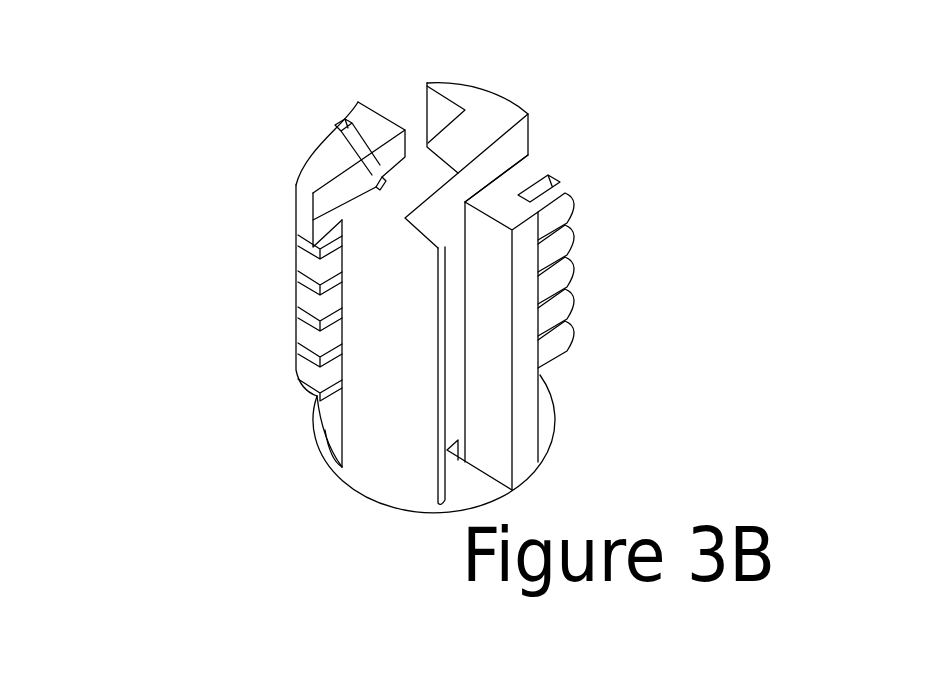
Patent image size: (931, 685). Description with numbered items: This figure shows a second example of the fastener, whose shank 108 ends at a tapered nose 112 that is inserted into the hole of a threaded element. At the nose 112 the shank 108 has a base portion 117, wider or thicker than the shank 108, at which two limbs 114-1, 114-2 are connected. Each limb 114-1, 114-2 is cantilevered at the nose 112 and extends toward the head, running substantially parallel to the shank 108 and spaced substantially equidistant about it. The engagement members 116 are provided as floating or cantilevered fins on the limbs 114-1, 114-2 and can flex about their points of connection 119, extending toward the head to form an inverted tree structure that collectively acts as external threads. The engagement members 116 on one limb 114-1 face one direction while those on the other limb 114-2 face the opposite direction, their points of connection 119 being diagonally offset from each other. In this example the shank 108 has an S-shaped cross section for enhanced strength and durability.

The shank 108 is at (477, 124).
The nose 112 is at (368, 505).
The limb 114-1 is at (353, 116).
The limb 114-2 is at (528, 423).
The engagement members 116 is at (302, 270).
The base portion 117 is at (337, 433).
The point of connection 119 is at (340, 143).